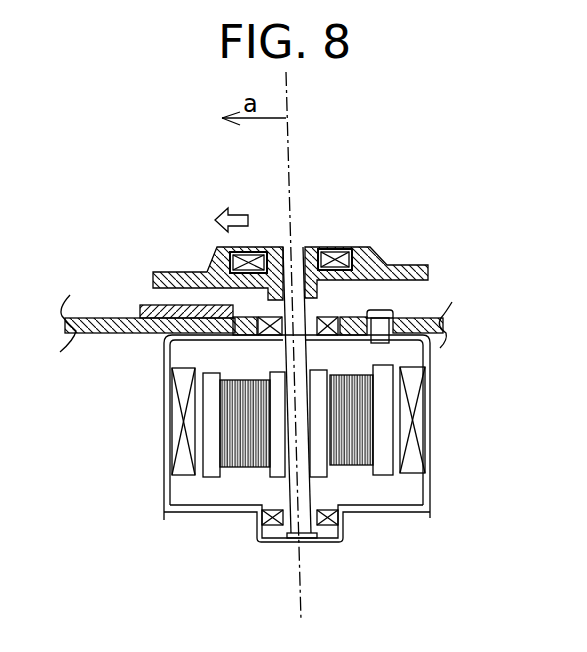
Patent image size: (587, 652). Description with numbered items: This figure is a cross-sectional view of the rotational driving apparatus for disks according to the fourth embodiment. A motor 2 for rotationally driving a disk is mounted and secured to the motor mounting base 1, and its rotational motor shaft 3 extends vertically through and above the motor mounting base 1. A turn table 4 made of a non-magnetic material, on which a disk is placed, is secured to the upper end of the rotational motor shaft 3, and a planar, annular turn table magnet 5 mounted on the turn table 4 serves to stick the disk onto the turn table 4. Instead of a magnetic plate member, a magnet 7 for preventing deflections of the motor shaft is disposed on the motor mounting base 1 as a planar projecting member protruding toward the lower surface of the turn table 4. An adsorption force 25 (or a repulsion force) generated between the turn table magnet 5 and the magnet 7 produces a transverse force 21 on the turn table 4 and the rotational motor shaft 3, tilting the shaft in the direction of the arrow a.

The motor mounting base 1 is at (446, 358).
The motor 2 is at (430, 490).
The rotational motor shaft 3 is at (300, 247).
The turn table 4 is at (428, 264).
The turn table magnet 5 is at (335, 249).
The magnet for preventing deflections of the motor shaft 7 is at (115, 320).
The transverse force 21 is at (242, 206).
The adsorption force 25 is at (228, 289).